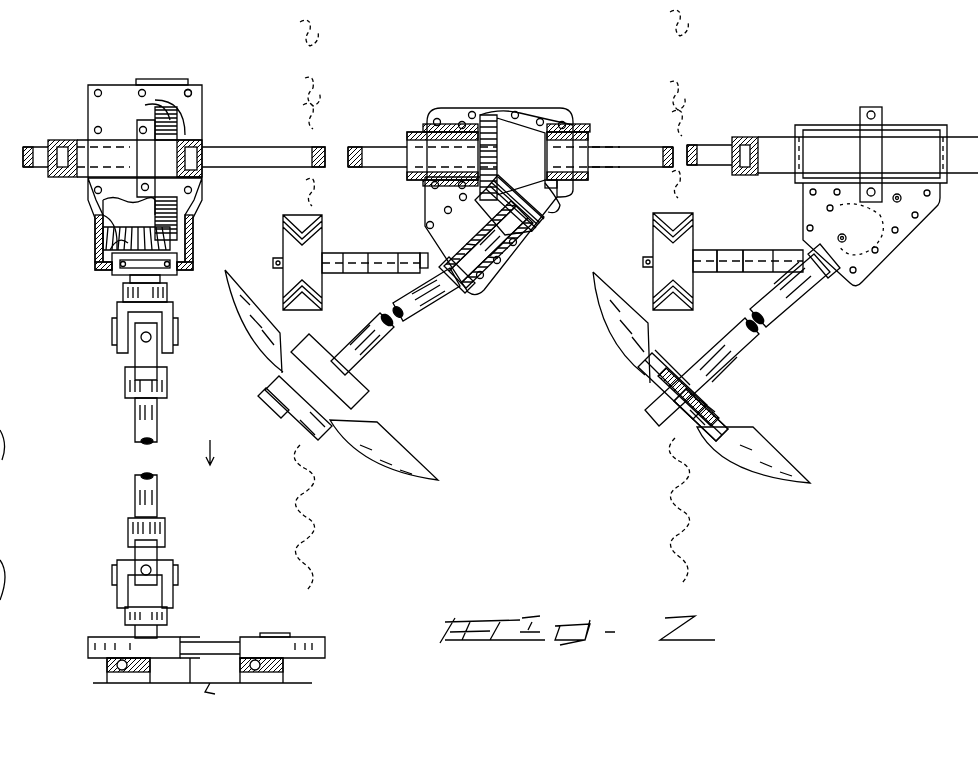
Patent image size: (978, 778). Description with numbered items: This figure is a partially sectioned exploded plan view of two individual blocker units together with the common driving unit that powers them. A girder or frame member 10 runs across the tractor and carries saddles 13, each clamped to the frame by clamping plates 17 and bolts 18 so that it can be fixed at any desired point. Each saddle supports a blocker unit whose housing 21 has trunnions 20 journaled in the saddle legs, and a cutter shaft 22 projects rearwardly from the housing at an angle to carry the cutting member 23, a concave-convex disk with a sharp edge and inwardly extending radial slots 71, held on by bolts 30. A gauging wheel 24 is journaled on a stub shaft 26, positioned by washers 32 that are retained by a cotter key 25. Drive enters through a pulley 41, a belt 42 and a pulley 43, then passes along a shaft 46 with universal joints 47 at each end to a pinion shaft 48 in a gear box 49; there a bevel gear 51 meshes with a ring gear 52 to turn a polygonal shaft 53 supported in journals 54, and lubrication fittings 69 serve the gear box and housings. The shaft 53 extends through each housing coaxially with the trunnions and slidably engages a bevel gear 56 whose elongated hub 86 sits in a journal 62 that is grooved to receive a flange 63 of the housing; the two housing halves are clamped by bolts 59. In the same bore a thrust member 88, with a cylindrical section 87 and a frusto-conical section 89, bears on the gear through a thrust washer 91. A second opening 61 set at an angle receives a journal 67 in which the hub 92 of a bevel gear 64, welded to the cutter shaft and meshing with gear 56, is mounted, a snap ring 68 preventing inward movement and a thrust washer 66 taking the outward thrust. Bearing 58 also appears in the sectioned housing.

The frame member 10 is at (745, 137).
The saddle 13 is at (915, 130).
The clamping plate 17 is at (878, 130).
The bolt 18 is at (871, 108).
The trunnion 20 is at (590, 140).
The housing 21 is at (562, 120).
The cutter shaft 22 is at (350, 345).
The cutting member 23 is at (375, 455).
The gauging wheel 24 is at (695, 280).
The cotter key 25 is at (640, 390).
The stub shaft 26 is at (278, 262).
The bolt 30 is at (728, 390).
The washer 32 is at (715, 252).
The pulley 41 is at (236, 638).
The belt 42 is at (325, 650).
The pulley 43 is at (205, 640).
The shaft 46 is at (140, 482).
The universal joint 47 is at (168, 380).
The pinion shaft 48 is at (125, 276).
The gear box 49 is at (176, 79).
The bevel gear 51 is at (103, 222).
The ring gear 52 is at (185, 240).
The shaft 53 is at (300, 147).
The journal 54 is at (185, 210).
The bevel gear 56 is at (520, 140).
The bearing 58 is at (475, 125).
The bolt 59 is at (520, 250).
The second opening 61 is at (490, 284).
The journal 62 is at (410, 172).
The flange / second journal 63 is at (440, 132).
The bevel gear 64 is at (527, 222).
The thrust washer 66 is at (525, 237).
The journal 67 is at (465, 280).
The snap ring 68 is at (450, 280).
The lubrication fitting 69 is at (193, 93).
The radial slot 71 is at (386, 393).
The hub 86 is at (400, 150).
The cylindrical section 87 is at (625, 148).
The thrust member 88 is at (525, 148).
The frusto-conical section 89 is at (540, 200).
The thrust washer 91 is at (560, 184).
The hub 92 is at (422, 260).